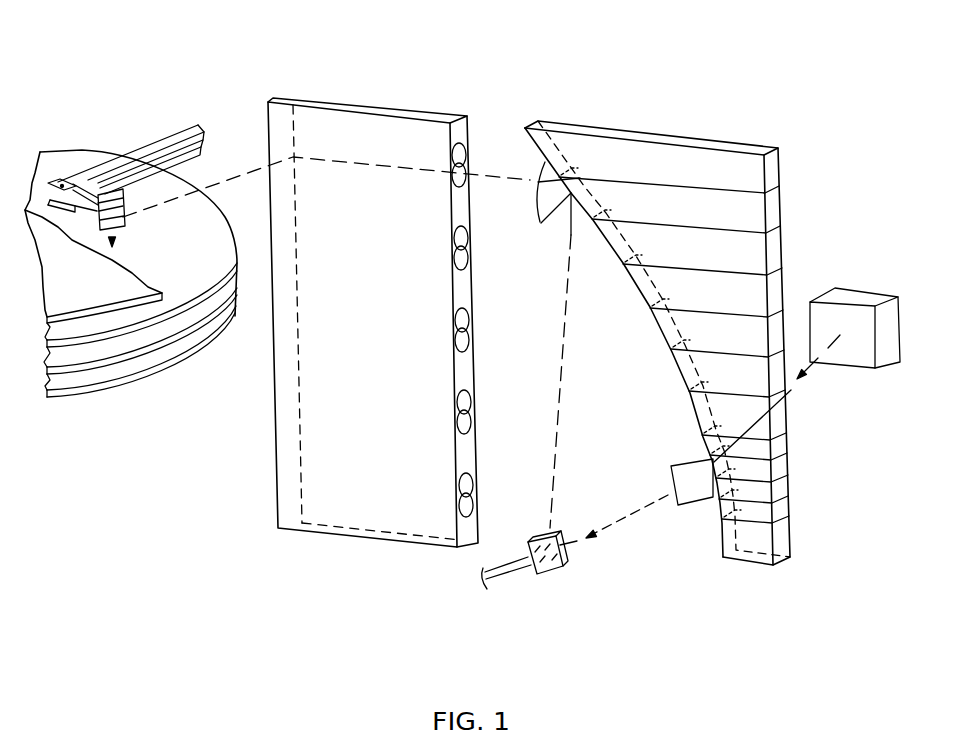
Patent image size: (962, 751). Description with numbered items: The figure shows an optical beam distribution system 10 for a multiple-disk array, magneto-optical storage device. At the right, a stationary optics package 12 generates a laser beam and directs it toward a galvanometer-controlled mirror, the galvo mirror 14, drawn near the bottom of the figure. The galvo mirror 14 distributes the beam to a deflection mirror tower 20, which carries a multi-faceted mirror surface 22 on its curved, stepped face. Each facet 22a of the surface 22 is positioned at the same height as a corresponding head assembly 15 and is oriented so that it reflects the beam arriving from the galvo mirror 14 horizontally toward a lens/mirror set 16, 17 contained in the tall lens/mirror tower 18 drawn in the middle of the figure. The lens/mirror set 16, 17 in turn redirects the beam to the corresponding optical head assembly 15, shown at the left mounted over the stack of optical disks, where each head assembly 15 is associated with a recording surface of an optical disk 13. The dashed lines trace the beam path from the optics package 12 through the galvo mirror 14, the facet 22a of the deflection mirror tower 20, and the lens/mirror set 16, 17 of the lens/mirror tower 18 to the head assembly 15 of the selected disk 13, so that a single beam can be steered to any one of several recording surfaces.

The optical beam distribution system 10 is at (205, 70).
The stationary optics package 12 is at (865, 368).
The optical disk 13 is at (222, 205).
The galvo mirror 14 is at (559, 576).
The optical head assembly 15 is at (117, 197).
The lens/mirror set 16 is at (470, 342).
The lens/mirror set 17 is at (288, 325).
The lens/mirror tower 18 is at (385, 93).
The deflection mirror tower 20 is at (790, 124).
The multi-faceted mirror surface 22 is at (606, 269).
The facet 22a is at (537, 210).